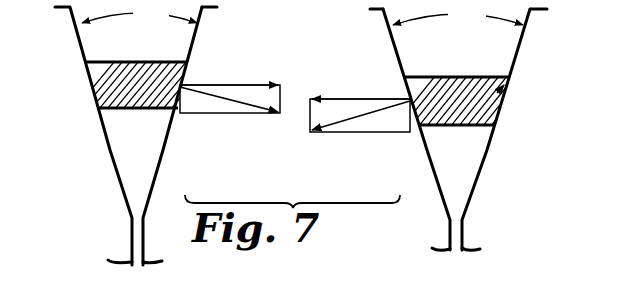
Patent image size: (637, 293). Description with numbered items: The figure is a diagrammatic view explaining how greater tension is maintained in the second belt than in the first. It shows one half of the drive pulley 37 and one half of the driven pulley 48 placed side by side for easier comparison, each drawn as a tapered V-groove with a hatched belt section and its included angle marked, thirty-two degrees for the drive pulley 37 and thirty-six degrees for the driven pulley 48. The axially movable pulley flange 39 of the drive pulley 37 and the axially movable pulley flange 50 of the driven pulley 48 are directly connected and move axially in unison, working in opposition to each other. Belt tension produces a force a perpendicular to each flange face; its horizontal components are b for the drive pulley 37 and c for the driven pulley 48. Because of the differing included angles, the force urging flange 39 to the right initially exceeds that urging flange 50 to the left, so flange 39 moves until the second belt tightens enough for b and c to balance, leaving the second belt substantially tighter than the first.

The drive pulley 37 is at (151, 135).
The pulley flange 39 is at (163, 155).
The driven pulley 48 is at (439, 128).
The pulley flange 50 is at (428, 162).